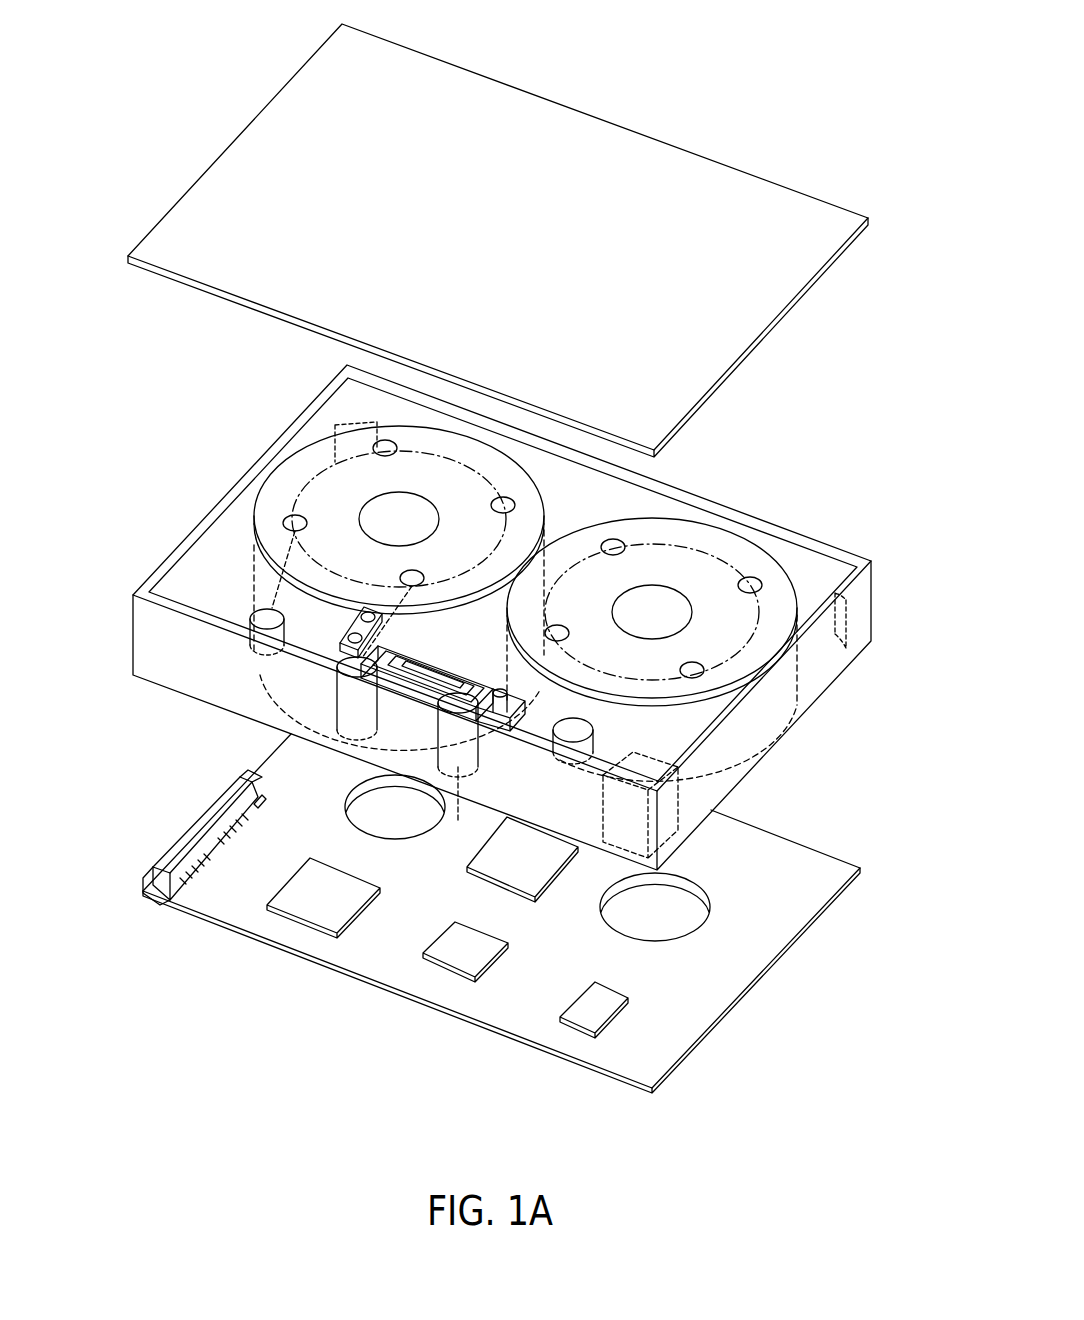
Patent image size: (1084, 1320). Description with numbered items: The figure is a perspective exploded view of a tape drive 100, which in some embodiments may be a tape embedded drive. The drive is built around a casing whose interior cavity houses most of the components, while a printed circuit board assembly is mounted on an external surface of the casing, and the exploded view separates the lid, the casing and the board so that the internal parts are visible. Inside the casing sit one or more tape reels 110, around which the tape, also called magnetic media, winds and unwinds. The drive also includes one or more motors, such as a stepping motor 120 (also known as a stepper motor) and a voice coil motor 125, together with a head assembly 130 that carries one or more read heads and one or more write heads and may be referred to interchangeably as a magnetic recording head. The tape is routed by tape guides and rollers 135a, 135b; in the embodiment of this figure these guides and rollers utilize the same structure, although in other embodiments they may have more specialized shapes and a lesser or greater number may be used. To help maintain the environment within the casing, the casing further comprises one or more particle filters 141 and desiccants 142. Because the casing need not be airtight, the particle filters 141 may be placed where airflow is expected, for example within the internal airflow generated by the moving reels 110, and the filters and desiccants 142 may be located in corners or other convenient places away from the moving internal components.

The tape drive 100 is at (773, 97).
The tape reels 110 is at (453, 428).
The stepping motor 120 is at (330, 633).
The voice coil motor 125 is at (410, 645).
The head assembly 130 is at (433, 688).
The tape guide/roller 135a is at (258, 614).
The tape guide/roller 135b is at (345, 682).
The particle filter 141 is at (848, 622).
The desiccant 142 is at (668, 815).